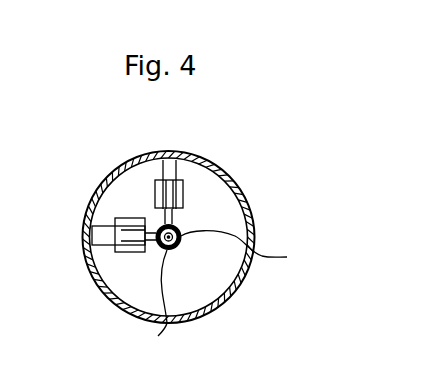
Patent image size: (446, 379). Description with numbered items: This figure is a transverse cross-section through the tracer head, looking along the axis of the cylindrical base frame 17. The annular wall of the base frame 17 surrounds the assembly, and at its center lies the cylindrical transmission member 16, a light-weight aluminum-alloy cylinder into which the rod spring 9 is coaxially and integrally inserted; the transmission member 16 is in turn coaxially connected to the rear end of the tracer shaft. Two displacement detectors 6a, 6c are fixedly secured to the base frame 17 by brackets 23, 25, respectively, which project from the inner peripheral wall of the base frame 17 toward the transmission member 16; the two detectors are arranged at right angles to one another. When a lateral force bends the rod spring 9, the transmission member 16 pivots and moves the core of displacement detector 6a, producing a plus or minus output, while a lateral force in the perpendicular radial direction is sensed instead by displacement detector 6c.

The rod spring 9 is at (153, 301).
The cylindrical transmission member 16 is at (246, 249).
The cylindrical base frame 17 is at (252, 204).
The bracket 23 is at (167, 151).
The bracket 25 is at (105, 223).
The displacement detector 6a is at (183, 192).
The displacement detector 6c is at (120, 252).